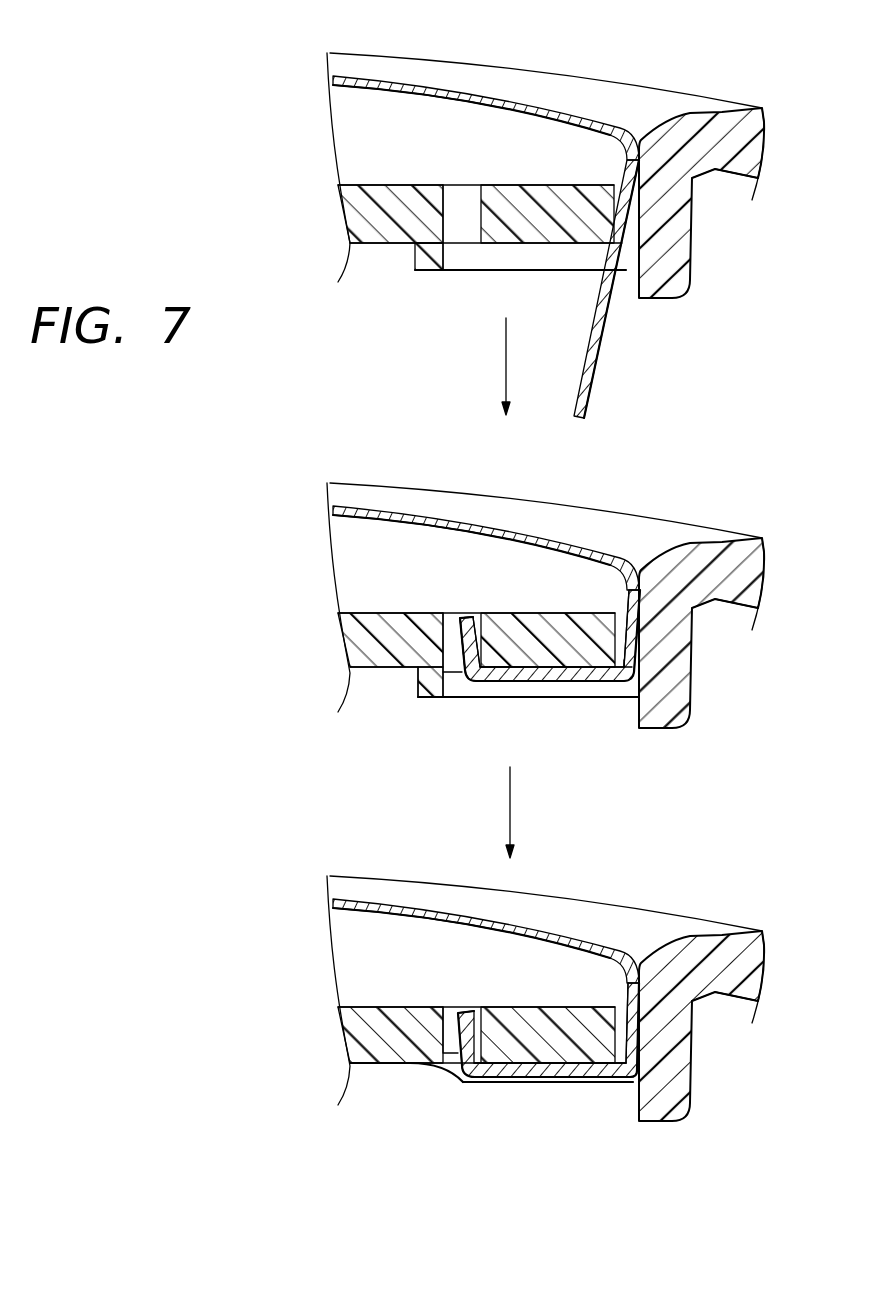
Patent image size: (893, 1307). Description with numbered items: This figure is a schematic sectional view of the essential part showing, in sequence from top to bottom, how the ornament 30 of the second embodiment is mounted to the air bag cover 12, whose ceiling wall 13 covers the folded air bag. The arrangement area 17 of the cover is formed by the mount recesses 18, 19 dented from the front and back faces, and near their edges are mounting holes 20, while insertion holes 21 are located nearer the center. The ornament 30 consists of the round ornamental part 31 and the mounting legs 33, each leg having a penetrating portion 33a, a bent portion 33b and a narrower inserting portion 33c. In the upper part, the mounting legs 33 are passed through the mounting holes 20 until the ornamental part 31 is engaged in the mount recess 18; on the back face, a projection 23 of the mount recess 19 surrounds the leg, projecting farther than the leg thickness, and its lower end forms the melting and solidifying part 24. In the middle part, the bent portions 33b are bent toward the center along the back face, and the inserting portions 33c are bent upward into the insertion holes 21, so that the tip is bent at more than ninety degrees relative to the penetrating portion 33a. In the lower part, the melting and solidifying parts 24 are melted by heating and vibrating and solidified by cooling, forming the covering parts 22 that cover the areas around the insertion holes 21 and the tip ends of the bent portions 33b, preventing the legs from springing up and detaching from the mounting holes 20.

The air bag cover 12 is at (749, 626).
The ceiling wall 13 is at (731, 177).
The arrangement area 17 is at (366, 131).
The mount recess 18 is at (376, 184).
The mount recess 19 is at (390, 245).
The mounting hole 20 is at (613, 193).
The insertion hole 21 is at (452, 194).
The covering part 22 is at (455, 1083).
The projection 23 is at (426, 510).
The melting and solidifying part 24 is at (432, 268).
The ornament 30 is at (508, 86).
The ornamental part 31 is at (450, 100).
The mounting leg 33 is at (601, 341).
The penetrating portion 33a is at (639, 673).
The bent portion 33b is at (556, 677).
The inserting portion 33c is at (470, 652).